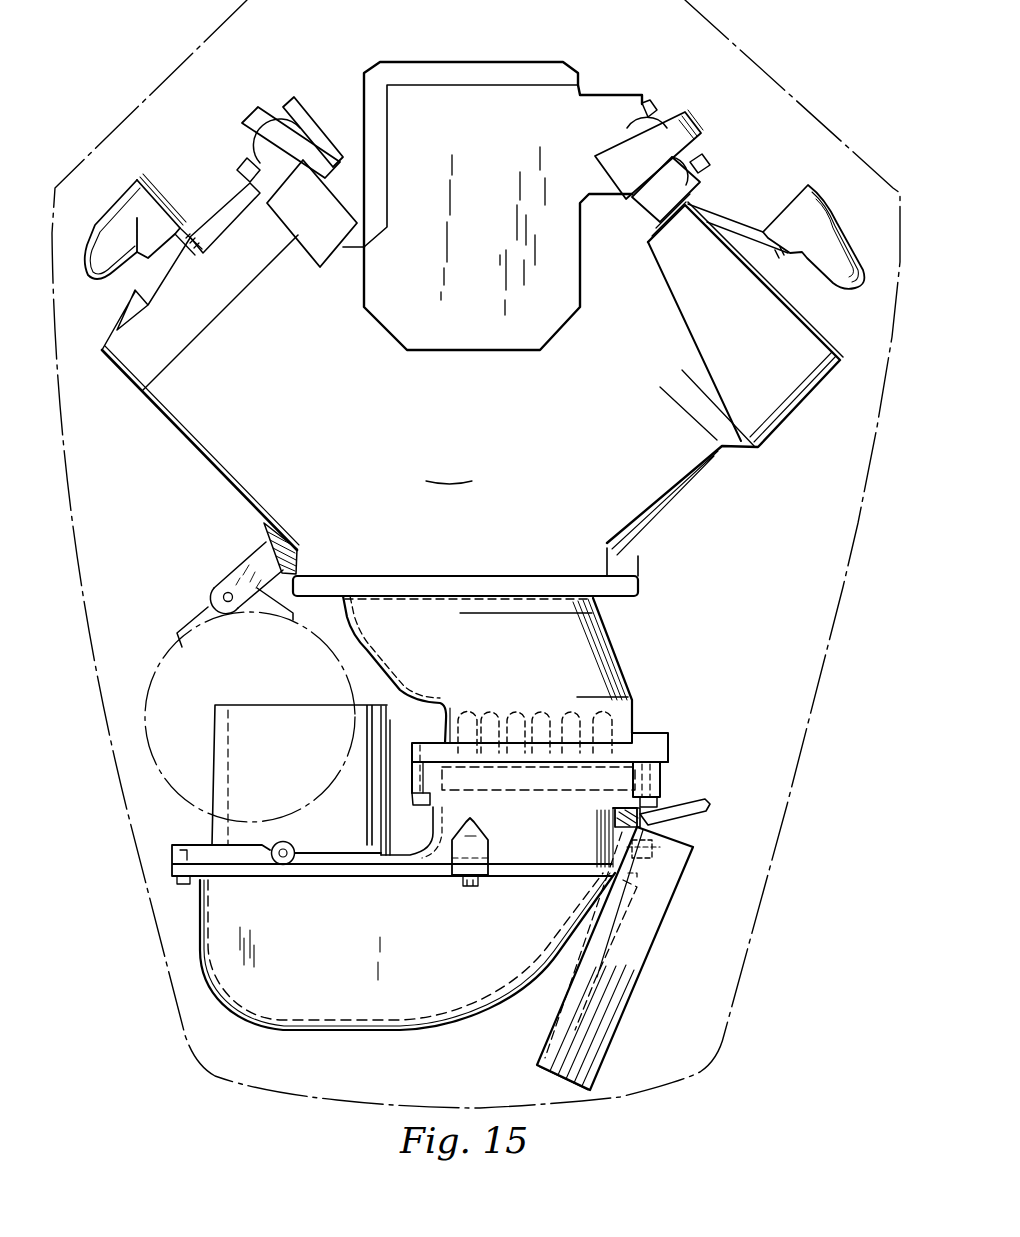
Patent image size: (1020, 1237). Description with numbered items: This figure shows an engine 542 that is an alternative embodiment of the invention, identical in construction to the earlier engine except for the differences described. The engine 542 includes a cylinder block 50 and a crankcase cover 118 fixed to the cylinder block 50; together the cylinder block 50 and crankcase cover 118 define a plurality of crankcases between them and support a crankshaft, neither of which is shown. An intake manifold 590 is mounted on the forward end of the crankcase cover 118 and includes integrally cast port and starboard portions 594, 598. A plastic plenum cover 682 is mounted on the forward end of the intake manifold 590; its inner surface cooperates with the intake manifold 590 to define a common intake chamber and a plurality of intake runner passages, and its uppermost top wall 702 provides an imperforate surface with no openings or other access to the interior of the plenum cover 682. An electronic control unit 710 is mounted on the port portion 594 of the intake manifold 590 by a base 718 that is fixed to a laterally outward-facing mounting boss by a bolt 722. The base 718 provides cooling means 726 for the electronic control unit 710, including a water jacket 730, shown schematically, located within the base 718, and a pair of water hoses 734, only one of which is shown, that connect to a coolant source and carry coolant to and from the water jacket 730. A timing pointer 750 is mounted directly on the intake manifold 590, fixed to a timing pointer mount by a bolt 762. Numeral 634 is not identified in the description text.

The cylinder block 50 is at (475, 354).
The crankcase cover 118 is at (577, 674).
The engine 542 is at (720, 642).
The intake manifold 590 is at (572, 842).
The port portion 594 is at (662, 765).
The starboard portion 598 is at (172, 852).
The reservoir 634 is at (213, 810).
The plenum cover 682 is at (418, 996).
The top wall 702 is at (325, 986).
The electronic control unit 710 is at (653, 896).
The base 718 is at (547, 1066).
The bolt 722 is at (655, 850).
The cooling means 726 is at (573, 967).
The water jacket 730 is at (565, 1021).
The water hoses 734 is at (697, 795).
The timing pointer 750 is at (452, 860).
The bolt 762 is at (477, 889).